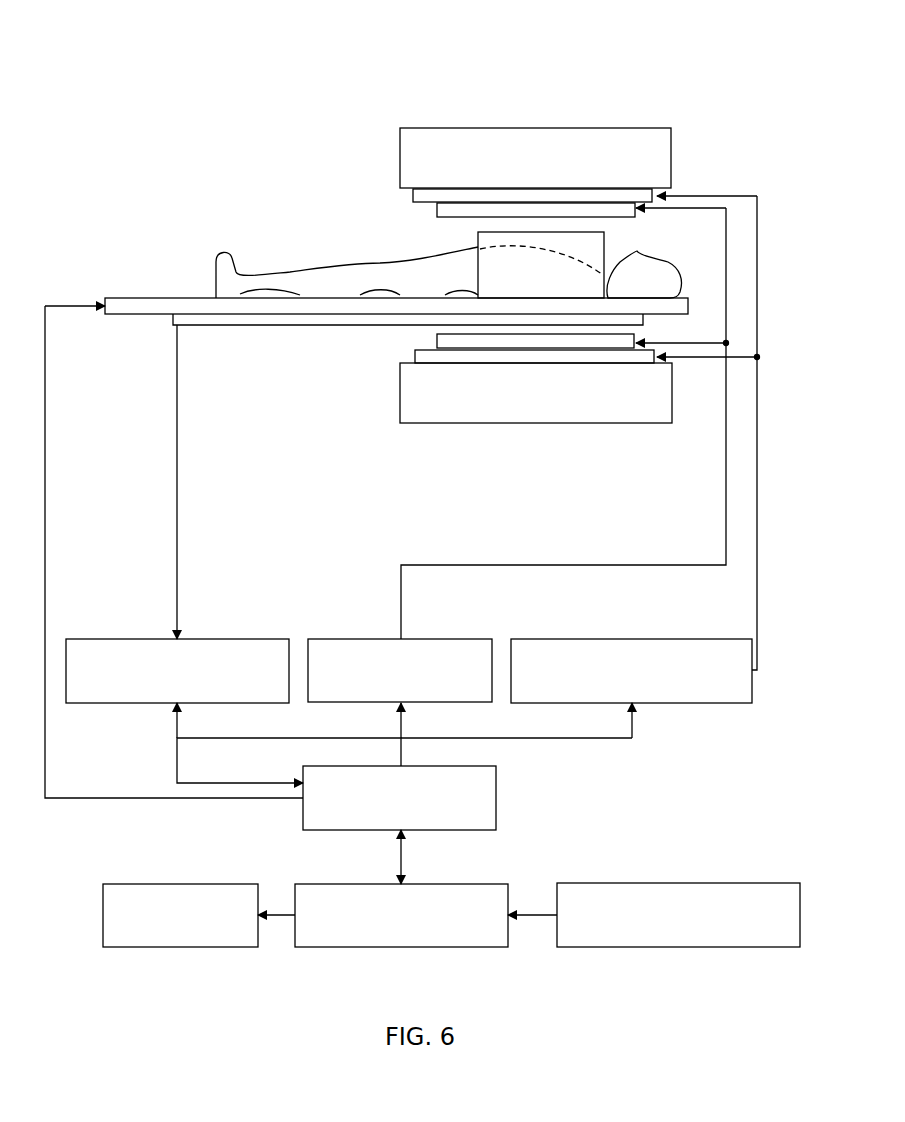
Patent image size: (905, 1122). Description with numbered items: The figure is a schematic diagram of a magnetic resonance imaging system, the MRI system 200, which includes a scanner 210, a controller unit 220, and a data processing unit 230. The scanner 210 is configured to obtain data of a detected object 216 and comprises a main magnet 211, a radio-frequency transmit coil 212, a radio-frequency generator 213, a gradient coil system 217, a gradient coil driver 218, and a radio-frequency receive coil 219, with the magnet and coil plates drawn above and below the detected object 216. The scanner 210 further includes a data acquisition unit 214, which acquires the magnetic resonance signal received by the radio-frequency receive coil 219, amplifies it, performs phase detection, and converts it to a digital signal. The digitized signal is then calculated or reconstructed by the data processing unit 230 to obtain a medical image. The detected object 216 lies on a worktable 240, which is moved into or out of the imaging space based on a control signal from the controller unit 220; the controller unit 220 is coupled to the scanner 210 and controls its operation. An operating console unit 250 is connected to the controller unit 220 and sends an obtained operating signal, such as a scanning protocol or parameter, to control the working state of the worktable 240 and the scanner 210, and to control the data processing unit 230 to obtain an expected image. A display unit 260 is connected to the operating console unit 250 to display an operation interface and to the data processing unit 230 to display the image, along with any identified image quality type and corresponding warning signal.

The MRI system 200 is at (208, 78).
The scanner 210 is at (383, 132).
The main magnet 211 is at (672, 162).
The radio-frequency transmit coil 212 is at (437, 210).
The radio-frequency generator 213 is at (375, 639).
The data acquisition unit 214 is at (268, 639).
The detected object 216 is at (292, 257).
The gradient coil system 217 is at (413, 194).
The gradient coil driver 218 is at (560, 639).
The radio-frequency receive coil 219 is at (607, 256).
The controller unit 220 is at (497, 800).
The data processing unit 230 is at (333, 884).
The worktable 240 is at (168, 298).
The operating console unit 250 is at (651, 883).
The display unit 260 is at (166, 884).